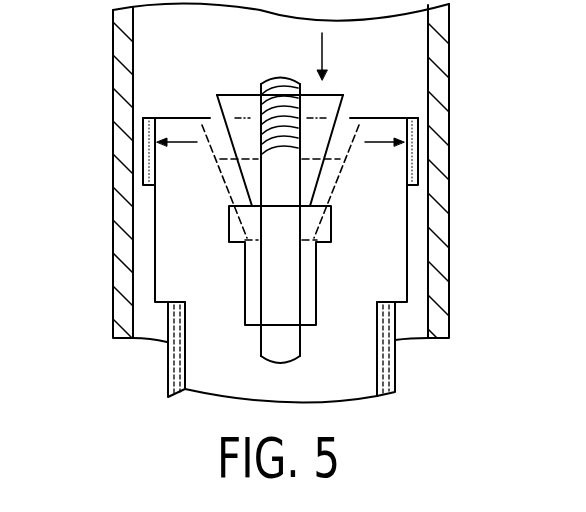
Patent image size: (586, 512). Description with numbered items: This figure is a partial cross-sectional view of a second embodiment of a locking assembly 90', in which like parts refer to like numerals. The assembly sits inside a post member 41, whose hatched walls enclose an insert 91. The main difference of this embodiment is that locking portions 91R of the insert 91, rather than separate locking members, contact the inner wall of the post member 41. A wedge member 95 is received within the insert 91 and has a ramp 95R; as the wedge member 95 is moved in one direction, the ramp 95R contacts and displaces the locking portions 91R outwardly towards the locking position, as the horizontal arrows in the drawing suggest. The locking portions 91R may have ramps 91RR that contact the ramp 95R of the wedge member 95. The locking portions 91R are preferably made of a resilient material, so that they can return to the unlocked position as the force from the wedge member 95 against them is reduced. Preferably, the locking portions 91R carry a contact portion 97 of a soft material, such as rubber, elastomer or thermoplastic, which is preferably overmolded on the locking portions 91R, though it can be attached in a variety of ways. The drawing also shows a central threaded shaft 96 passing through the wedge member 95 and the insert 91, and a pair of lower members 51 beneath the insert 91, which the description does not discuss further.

The post member 41 is at (440, 58).
The pin 51 is at (395, 368).
The locking assembly 90' is at (237, 352).
The insert 91 is at (393, 265).
The locking portions 91R is at (358, 175).
The ramps 91RR is at (341, 130).
The wedge member 95 is at (238, 104).
The ramp 95R is at (241, 183).
The threaded rod 96 is at (280, 339).
The contact portion 97 is at (413, 143).